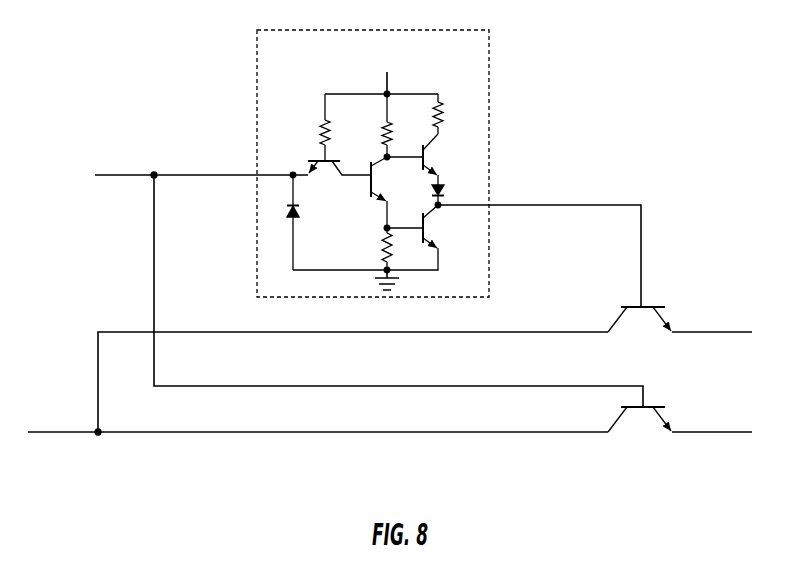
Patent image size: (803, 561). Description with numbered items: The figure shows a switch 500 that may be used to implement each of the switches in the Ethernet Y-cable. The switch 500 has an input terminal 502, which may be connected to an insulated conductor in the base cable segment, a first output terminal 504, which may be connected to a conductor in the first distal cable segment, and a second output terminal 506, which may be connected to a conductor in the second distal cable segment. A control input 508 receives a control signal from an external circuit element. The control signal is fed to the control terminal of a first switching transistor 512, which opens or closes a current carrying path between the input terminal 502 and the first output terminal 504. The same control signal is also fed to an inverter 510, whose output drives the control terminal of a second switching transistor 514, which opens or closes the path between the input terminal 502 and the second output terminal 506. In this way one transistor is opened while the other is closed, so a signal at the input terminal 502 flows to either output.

The switch 500 is at (643, 104).
The input terminal 502 is at (52, 461).
The first output terminal 504 is at (755, 458).
The second output terminal 506 is at (755, 360).
The control input 508 is at (113, 206).
The inverter 510 is at (463, 86).
The first switching transistor 512 is at (658, 458).
The second switching transistor 514 is at (658, 360).